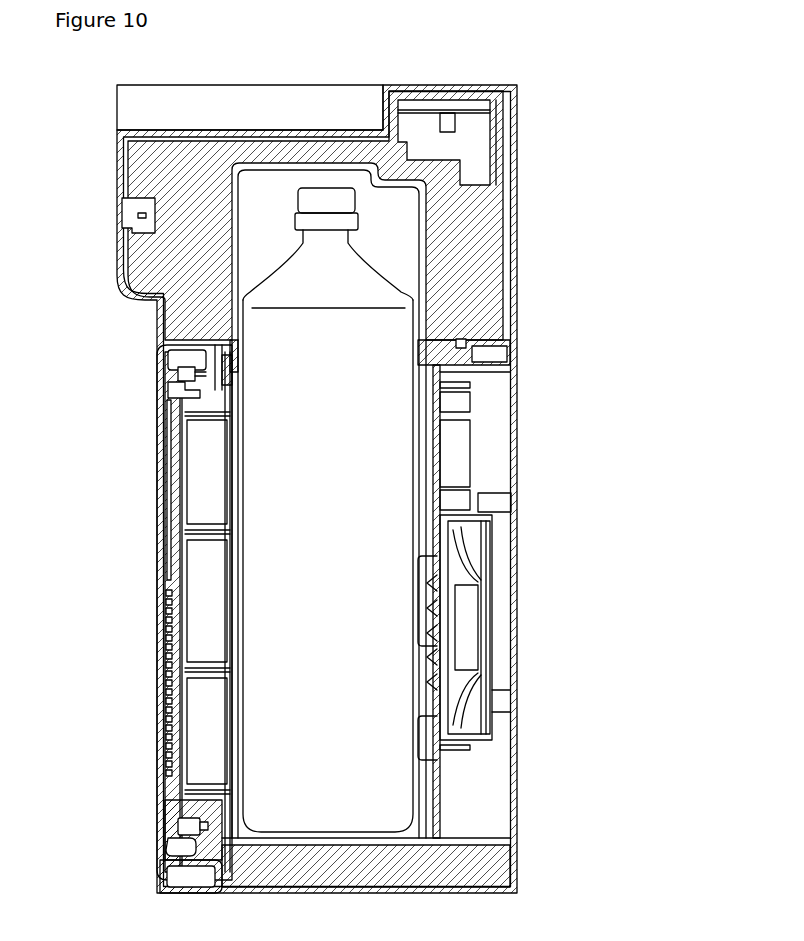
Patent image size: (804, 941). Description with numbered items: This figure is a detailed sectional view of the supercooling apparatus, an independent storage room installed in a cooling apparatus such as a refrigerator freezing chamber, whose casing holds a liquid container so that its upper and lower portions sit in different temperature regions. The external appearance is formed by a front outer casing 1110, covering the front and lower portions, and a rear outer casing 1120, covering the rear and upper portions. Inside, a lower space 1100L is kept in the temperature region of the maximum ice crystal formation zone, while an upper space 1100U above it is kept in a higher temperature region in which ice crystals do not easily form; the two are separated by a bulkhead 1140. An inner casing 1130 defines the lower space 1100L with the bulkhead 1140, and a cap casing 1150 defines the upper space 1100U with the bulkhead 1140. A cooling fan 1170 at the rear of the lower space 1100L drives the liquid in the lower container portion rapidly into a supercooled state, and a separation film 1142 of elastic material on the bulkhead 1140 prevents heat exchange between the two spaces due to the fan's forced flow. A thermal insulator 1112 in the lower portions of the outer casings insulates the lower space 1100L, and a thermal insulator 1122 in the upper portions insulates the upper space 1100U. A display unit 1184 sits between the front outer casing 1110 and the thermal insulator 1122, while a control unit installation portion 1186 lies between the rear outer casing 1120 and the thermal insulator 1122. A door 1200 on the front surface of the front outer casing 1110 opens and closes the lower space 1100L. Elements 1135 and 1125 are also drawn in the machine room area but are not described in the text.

The rear outer casing 1120 is at (512, 198).
The thermal insulator 1122 is at (498, 273).
The control unit installation portion 1186 is at (505, 112).
The display unit 1184 is at (130, 222).
The bulkhead 1140 is at (493, 365).
The separation film 1142 is at (463, 350).
The inner casing 1130 is at (440, 447).
The heat exchanger 1135 is at (442, 492).
The machine room bracket 1125 is at (505, 506).
The cooling fan 1170 is at (500, 607).
The thermal insulator 1112 is at (495, 875).
The lower space 1100L is at (350, 569).
The upper space 1100U is at (294, 226).
The door 1200 is at (152, 612).
The cap casing 1150 is at (232, 285).
The front outer casing 1110 is at (160, 863).